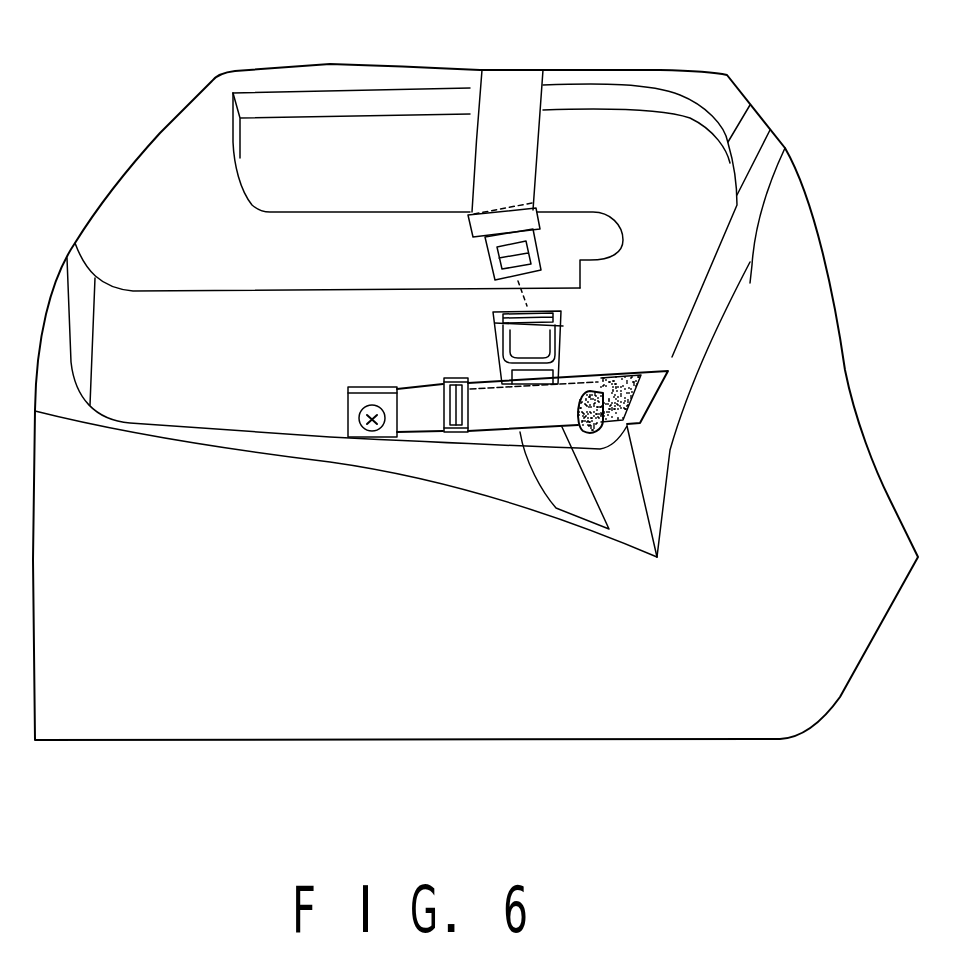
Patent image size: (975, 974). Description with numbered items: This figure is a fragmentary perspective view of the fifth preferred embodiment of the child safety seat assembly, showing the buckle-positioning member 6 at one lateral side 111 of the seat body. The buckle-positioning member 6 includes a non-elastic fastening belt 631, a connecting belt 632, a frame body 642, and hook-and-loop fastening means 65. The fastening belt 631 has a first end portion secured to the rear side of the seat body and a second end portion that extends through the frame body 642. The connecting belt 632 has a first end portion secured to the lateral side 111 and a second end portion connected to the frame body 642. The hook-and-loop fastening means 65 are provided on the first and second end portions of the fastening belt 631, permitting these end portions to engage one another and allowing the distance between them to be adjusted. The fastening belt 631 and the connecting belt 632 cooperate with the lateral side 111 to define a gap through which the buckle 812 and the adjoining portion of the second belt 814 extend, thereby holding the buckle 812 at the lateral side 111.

The lateral side 111 is at (163, 398).
The buckle 812 is at (495, 340).
The buckle-positioning member 6 is at (592, 372).
The non-elastic fastening belt 631 is at (657, 385).
The connecting belt 632 is at (358, 427).
The frame body 642 is at (458, 432).
The hook-and-loop fastening means 65 is at (627, 425).
The second belt 814 is at (567, 490).